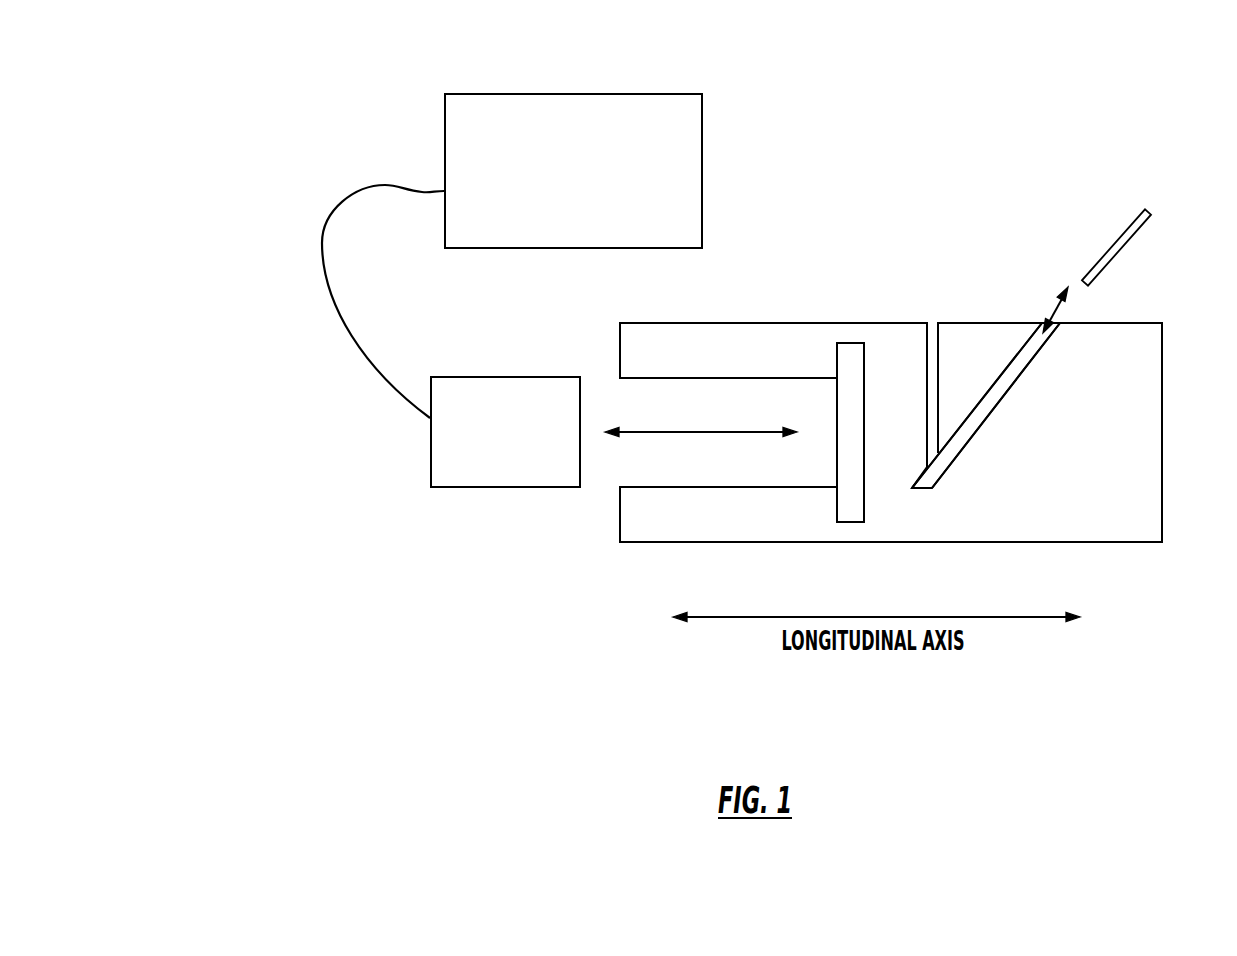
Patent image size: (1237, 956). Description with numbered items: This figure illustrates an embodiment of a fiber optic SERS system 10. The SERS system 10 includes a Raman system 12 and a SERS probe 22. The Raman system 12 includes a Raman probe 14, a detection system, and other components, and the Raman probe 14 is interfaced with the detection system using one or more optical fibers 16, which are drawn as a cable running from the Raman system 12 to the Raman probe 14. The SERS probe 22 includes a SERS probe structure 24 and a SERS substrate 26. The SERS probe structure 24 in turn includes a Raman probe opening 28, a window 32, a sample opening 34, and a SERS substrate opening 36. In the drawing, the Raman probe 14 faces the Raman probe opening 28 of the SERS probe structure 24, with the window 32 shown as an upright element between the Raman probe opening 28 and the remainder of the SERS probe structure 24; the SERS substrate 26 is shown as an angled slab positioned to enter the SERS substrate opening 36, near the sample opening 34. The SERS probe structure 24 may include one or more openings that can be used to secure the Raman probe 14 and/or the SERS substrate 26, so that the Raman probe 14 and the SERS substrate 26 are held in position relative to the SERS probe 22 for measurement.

The SERS system 10 is at (321, 555).
The Raman system 12 is at (662, 94).
The Raman probe 14 is at (497, 377).
The optical fibers 16 is at (377, 332).
The SERS probe 22 is at (831, 248).
The SERS probe structure 24 is at (1093, 450).
The SERS substrate 26 is at (1175, 203).
The Raman probe opening 28 is at (597, 474).
The window 32 is at (855, 330).
The sample opening 34 is at (942, 288).
The SERS substrate opening 36 is at (1087, 298).